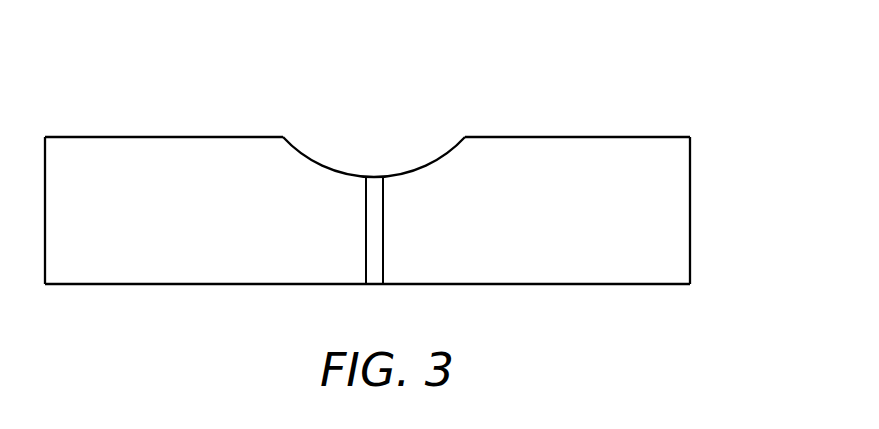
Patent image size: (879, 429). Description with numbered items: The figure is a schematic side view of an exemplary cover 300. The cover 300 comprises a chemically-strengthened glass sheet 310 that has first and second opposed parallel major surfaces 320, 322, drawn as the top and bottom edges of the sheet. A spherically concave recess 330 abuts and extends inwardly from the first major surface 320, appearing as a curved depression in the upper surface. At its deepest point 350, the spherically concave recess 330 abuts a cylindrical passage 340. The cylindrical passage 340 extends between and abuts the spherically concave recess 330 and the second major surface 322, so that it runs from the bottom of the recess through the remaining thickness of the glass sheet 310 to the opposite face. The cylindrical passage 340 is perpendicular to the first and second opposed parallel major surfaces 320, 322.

The cover 300 is at (650, 60).
The chemically-strengthened glass sheet 310 is at (690, 189).
The first major surface 320 is at (541, 137).
The second major surface 322 is at (596, 286).
The spherically concave recess 330 is at (305, 152).
The cylindrical passage 340 is at (365, 232).
The deepest point 350 is at (371, 176).